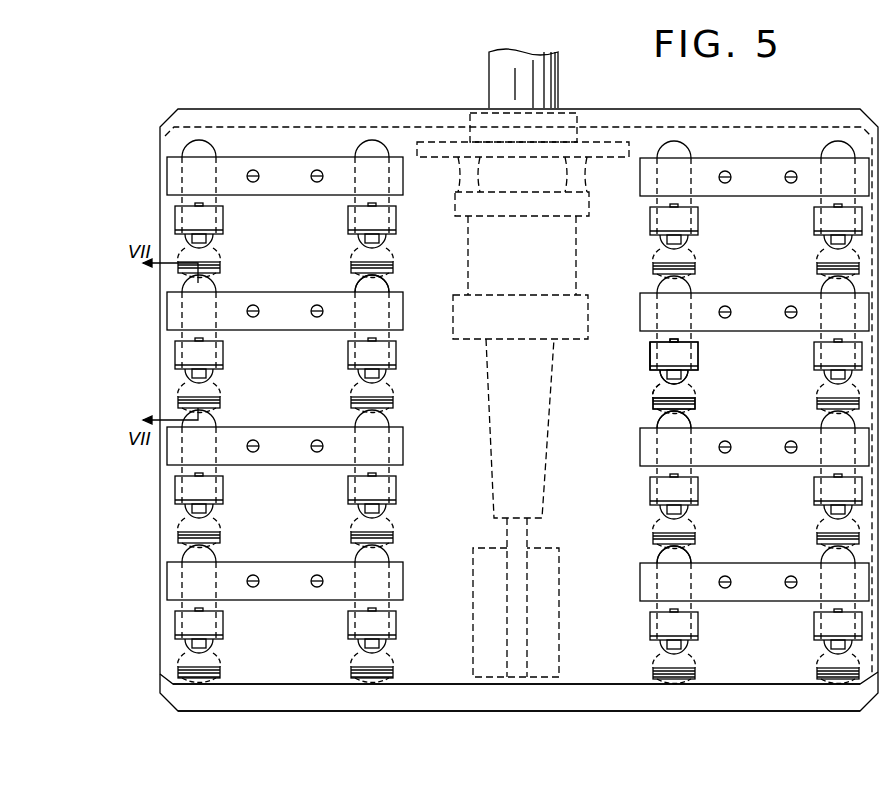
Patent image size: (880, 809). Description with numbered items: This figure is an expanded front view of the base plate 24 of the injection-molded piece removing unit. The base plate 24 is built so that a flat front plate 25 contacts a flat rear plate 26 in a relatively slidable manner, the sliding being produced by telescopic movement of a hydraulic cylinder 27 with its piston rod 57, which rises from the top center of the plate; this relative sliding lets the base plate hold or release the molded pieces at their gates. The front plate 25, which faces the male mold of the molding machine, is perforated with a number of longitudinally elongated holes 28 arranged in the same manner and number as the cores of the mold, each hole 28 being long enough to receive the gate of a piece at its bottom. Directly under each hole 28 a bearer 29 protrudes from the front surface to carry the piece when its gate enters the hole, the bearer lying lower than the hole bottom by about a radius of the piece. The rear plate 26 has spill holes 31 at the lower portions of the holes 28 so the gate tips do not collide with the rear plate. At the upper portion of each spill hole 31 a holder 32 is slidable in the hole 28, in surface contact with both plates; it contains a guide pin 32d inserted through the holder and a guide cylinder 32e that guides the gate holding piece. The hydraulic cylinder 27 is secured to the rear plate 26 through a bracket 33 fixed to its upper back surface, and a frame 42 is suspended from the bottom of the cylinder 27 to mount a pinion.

The base plate 24 is at (724, 109).
The front plate 25 is at (598, 662).
The rear plate 26 is at (678, 696).
The hydraulic cylinder 27 is at (558, 283).
The longitudinally elongated hole 28 is at (384, 284).
The bearer 29 is at (655, 402).
The spill hole 31 is at (693, 399).
The holder 32 is at (682, 357).
The guide pin 32d is at (667, 340).
The guide cylinder 32e is at (651, 358).
The bracket 33 is at (674, 382).
The frame 42 is at (486, 365).
The piston rod 57 is at (558, 82).